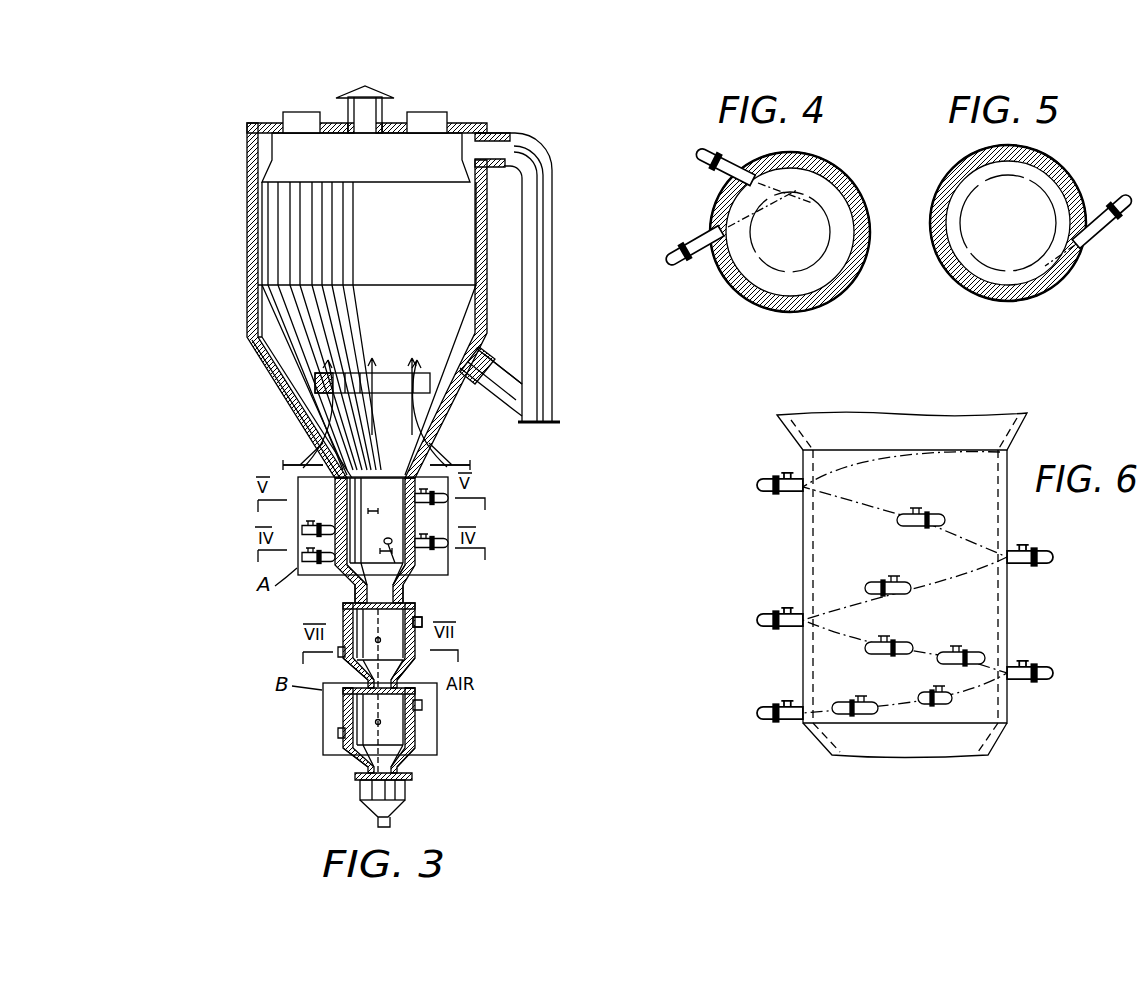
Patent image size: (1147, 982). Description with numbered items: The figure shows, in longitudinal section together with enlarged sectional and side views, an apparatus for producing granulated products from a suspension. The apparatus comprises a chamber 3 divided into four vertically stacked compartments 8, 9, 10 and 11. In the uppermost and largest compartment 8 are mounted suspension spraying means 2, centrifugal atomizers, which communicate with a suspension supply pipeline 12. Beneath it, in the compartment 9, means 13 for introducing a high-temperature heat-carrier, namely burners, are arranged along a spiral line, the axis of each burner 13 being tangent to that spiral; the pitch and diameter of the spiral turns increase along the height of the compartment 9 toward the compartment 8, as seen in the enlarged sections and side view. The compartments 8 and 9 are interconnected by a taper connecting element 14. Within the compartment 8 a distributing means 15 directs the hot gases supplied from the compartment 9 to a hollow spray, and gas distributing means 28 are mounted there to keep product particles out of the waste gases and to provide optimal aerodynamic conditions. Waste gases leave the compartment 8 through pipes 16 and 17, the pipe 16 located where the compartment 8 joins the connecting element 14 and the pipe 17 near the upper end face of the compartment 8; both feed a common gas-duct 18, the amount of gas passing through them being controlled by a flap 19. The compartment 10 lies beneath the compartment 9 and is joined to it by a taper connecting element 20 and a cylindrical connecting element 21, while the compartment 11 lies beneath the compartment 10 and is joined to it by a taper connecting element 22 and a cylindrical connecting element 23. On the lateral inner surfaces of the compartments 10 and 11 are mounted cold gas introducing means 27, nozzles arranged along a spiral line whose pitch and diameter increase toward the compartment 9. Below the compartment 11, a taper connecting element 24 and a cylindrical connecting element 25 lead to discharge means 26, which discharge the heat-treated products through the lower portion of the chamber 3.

In FIG. 3, the suspension spraying means 2 is at (328, 372).
In FIG. 3, the chamber 3 is at (244, 182).
In FIG. 3, the compartment 8 is at (258, 331).
In FIG. 3, the compartment 9 is at (345, 504).
In FIG. 4, the compartment 9 is at (742, 286).
In FIG. 5, the compartment 9 is at (1068, 277).
In FIG. 6, the compartment 9 is at (822, 548).
In FIG. 3, the compartment 10 is at (343, 626).
In FIG. 3, the compartment 11 is at (345, 728).
In FIG. 3, the suspension supply pipeline 12 is at (300, 462).
In FIG. 3, the means for introducing a high-temperature heat-carrier 13 is at (413, 548).
In FIG. 4, the means for introducing a high-temperature heat-carrier 13 is at (728, 171).
In FIG. 5, the means for introducing a high-temperature heat-carrier 13 is at (1097, 229).
In FIG. 6, the means for introducing a high-temperature heat-carrier 13 is at (941, 518).
In FIG. 3, the taper connecting element 14 is at (289, 414).
In FIG. 6, the taper connecting element 14 is at (985, 432).
In FIG. 3, the distributing means 15 is at (300, 303).
In FIG. 3, the pipe 16 is at (484, 352).
In FIG. 3, the pipe 17 is at (490, 148).
In FIG. 3, the common gas-duct 18 is at (548, 364).
In FIG. 3, the flap 19 is at (542, 246).
In FIG. 3, the taper connecting element 20 is at (340, 578).
In FIG. 3, the cylindrical connecting element 21 is at (356, 600).
In FIG. 3, the taper connecting element 22 is at (356, 676).
In FIG. 3, the cylindrical connecting element 23 is at (348, 690).
In FIG. 3, the taper connecting element 24 is at (348, 757).
In FIG. 3, the cylindrical connecting element 25 is at (366, 776).
In FIG. 3, the discharge means 26 is at (421, 790).
In FIG. 3, the cold gas introducing means 27 is at (425, 697).
In FIG. 3, the gas distributing means 28 is at (276, 148).